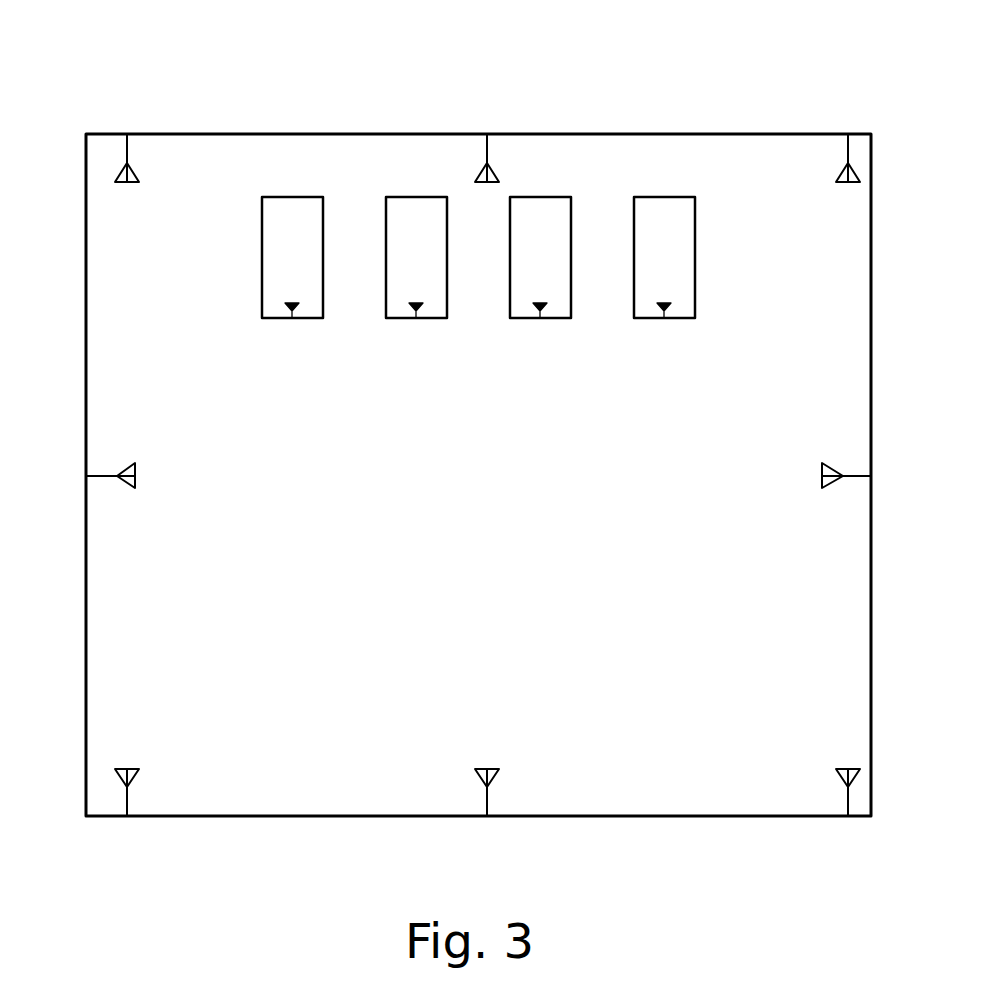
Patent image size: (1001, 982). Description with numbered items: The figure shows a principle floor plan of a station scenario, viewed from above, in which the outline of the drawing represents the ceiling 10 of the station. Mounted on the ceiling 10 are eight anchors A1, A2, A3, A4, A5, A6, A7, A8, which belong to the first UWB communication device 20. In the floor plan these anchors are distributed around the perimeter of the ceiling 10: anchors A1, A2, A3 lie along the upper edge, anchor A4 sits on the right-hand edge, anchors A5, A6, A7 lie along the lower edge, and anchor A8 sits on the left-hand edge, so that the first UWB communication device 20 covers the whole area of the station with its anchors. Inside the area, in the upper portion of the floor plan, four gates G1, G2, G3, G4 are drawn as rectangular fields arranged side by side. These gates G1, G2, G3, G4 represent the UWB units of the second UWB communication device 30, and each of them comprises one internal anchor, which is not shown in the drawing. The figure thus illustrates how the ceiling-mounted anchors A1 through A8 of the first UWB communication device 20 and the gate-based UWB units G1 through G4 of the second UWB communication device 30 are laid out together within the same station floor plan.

The ceiling 10 is at (687, 134).
The first UWB communication device 20 is at (485, 457).
The second UWB communication device 30 is at (463, 350).
The anchor A1 is at (134, 176).
The anchor A2 is at (497, 171).
The anchor A3 is at (860, 182).
The anchor A4 is at (825, 465).
The anchor A5 is at (853, 780).
The anchor A6 is at (492, 780).
The anchor A7 is at (132, 780).
The anchor A8 is at (134, 464).
The gate G1 is at (278, 318).
The gate G2 is at (400, 318).
The gate G3 is at (530, 318).
The gate G4 is at (652, 318).